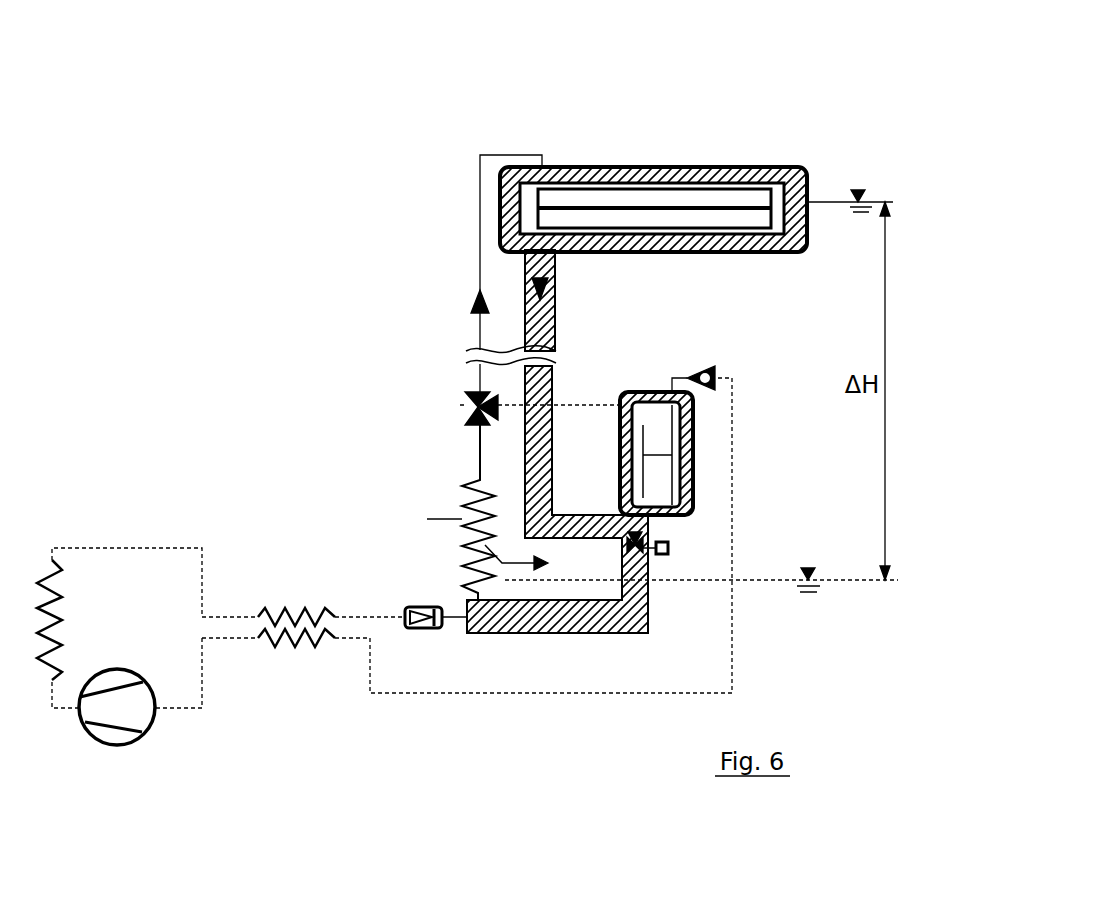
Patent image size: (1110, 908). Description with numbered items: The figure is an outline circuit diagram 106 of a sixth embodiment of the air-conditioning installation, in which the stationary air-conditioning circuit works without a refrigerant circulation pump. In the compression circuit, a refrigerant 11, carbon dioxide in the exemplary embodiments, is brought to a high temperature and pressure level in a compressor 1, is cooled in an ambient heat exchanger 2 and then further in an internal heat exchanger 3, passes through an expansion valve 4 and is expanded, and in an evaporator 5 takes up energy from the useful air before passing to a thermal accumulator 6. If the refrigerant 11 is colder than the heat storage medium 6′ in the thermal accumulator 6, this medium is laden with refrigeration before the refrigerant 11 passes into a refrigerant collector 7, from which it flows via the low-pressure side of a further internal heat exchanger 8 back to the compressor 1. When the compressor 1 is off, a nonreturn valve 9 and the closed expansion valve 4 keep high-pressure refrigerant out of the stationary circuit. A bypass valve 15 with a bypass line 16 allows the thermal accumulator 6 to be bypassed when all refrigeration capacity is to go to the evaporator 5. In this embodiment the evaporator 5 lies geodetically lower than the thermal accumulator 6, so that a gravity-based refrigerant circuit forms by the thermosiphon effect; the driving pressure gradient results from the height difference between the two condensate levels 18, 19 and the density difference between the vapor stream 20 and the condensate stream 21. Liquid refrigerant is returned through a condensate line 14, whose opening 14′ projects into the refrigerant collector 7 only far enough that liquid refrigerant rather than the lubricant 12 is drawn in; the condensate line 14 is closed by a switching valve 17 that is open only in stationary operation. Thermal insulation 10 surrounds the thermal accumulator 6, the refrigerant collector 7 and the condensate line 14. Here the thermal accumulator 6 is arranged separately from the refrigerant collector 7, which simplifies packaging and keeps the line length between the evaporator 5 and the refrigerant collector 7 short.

The compressor 1 is at (120, 745).
The ambient heat exchanger 2 is at (57, 612).
The internal heat exchanger 3 is at (278, 610).
The expansion valve 4 is at (417, 633).
The evaporator 5 is at (472, 552).
The thermal accumulator 6 is at (767, 252).
The heat storage medium 6′ is at (740, 213).
The refrigerant collector 7 is at (694, 414).
The further internal heat exchanger 8 is at (292, 645).
The nonreturn valve 9 is at (703, 363).
The thermal insulation 10 is at (627, 253).
The refrigerant 11 is at (657, 472).
The lubricant 12 is at (692, 498).
The condensate line 14 is at (587, 620).
The opening of the condensate line 14′ is at (619, 477).
The bypass valve 15 is at (465, 405).
The bypass line 16 is at (575, 405).
The switching valve 17 is at (668, 557).
The condensate level 18 is at (850, 181).
The condensate level 19 is at (701, 598).
The vapor stream 20 is at (468, 303).
The condensate stream 21 is at (555, 293).
The circuit diagram 106 is at (703, 122).